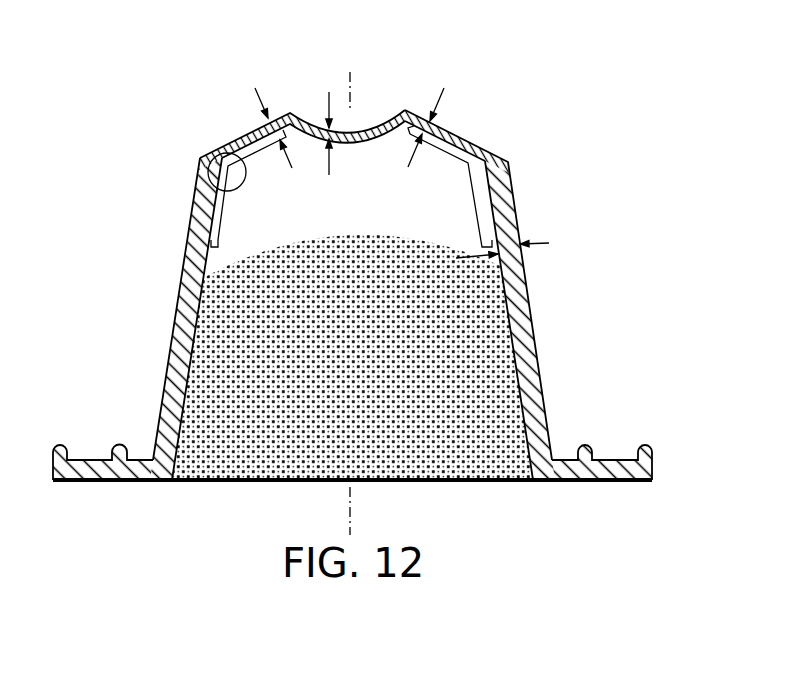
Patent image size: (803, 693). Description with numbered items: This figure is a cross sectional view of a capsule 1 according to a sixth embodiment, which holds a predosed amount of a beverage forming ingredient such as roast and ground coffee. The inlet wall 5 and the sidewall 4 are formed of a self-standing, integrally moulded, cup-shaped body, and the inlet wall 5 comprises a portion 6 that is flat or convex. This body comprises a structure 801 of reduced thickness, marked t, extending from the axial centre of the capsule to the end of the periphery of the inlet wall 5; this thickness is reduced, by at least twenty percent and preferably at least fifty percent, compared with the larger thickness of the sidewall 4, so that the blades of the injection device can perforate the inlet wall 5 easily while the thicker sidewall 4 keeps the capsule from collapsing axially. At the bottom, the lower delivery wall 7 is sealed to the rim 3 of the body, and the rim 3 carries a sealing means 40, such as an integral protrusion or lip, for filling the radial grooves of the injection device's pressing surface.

The capsule 1 is at (352, 274).
The rim 3 is at (556, 442).
The sidewall 4 is at (539, 373).
The inlet wall 5 is at (354, 130).
The flat or convex portion 6 is at (457, 122).
The lower delivery wall 7 is at (352, 461).
The sealing means 40 is at (118, 444).
The structure of reduced thickness 801 is at (208, 174).